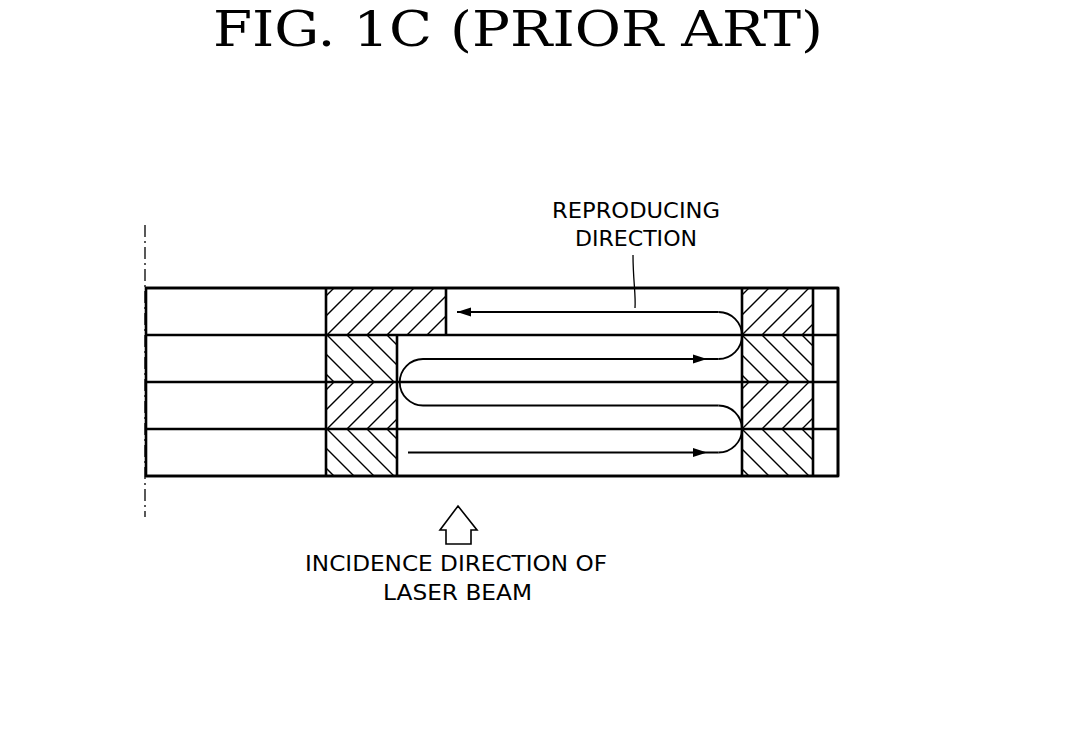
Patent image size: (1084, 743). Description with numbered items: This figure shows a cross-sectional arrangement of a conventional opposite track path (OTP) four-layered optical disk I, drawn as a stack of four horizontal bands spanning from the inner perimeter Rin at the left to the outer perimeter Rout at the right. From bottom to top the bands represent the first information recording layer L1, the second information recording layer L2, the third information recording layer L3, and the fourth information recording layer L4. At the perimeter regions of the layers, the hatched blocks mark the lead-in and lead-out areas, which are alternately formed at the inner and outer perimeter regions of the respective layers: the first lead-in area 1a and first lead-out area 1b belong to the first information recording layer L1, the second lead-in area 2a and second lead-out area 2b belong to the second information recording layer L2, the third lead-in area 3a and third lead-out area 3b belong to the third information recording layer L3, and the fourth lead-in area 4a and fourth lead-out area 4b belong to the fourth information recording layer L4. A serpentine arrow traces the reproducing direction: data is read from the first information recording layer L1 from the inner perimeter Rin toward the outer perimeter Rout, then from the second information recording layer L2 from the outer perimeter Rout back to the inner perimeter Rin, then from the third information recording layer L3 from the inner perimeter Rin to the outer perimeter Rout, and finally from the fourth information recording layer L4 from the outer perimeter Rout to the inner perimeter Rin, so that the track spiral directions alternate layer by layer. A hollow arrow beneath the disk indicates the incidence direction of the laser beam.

The first lead-in area 1a is at (367, 465).
The first lead-out area 1b is at (800, 453).
The second lead-in area 2a is at (800, 407).
The second lead-out area 2b is at (340, 405).
The third lead-in area 3a is at (358, 352).
The third lead-out area 3b is at (800, 360).
The fourth lead-in area 4a is at (800, 312).
The fourth lead-out area 4b is at (400, 288).
The first information recording layer L1 is at (158, 452).
The second information recording layer L2 is at (158, 405).
The third information recording layer L3 is at (158, 359).
The fourth information recording layer L4 is at (158, 313).
The inner perimeter Rin is at (145, 386).
The outer perimeter Rout is at (795, 418).
The information storage medium I is at (543, 476).